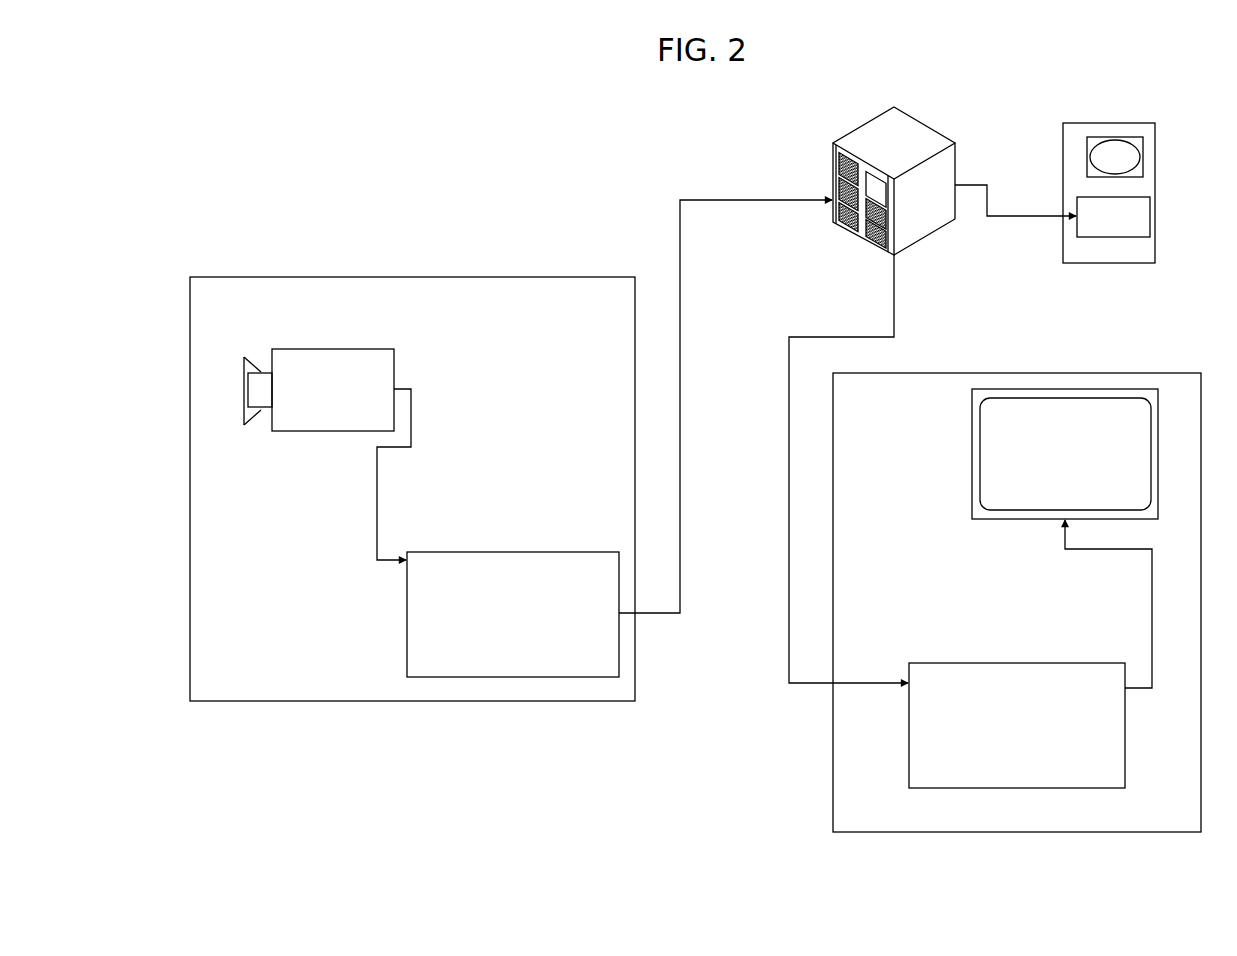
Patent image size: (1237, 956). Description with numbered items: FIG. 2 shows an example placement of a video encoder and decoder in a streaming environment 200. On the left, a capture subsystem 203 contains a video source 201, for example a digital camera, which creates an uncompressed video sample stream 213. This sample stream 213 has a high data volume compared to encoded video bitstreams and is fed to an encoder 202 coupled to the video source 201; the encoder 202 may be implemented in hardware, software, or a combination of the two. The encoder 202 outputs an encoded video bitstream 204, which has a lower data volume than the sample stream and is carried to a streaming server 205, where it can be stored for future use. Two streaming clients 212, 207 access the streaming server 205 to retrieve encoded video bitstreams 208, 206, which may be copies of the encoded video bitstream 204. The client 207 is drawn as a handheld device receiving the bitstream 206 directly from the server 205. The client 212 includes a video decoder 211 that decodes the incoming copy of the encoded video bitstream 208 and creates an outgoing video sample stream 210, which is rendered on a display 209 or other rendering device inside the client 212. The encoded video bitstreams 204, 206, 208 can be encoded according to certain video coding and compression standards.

The streaming environment 200 is at (225, 145).
The video source 201 is at (330, 348).
The encoder 202 is at (525, 551).
The capture subsystem 203 is at (400, 703).
The encoded video bitstream 204 is at (680, 228).
The streaming server 205 is at (832, 165).
The encoded video bitstream 206 is at (1018, 218).
The streaming client 207 is at (1157, 152).
The encoded video bitstream 208 is at (788, 520).
The display 209 is at (970, 445).
The outgoing video sample stream 210 is at (1150, 622).
The video decoder 211 is at (906, 752).
The streaming client 212 is at (832, 768).
The uncompressed video sample stream 213 is at (376, 513).